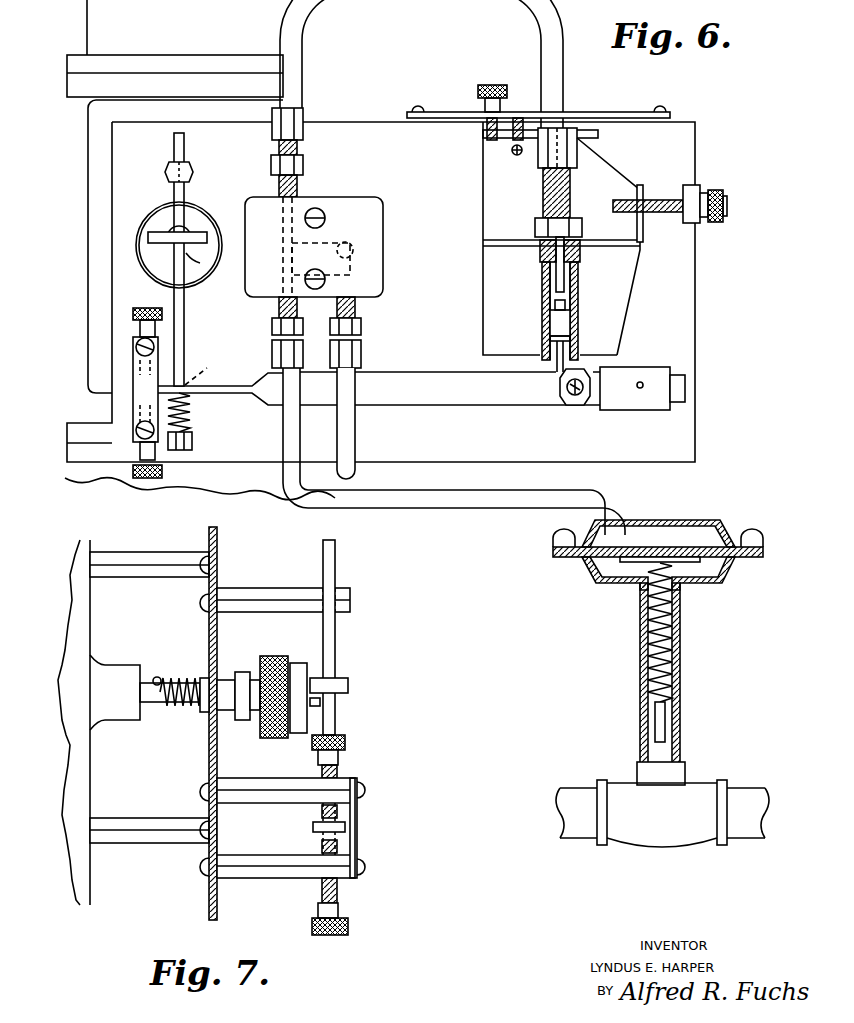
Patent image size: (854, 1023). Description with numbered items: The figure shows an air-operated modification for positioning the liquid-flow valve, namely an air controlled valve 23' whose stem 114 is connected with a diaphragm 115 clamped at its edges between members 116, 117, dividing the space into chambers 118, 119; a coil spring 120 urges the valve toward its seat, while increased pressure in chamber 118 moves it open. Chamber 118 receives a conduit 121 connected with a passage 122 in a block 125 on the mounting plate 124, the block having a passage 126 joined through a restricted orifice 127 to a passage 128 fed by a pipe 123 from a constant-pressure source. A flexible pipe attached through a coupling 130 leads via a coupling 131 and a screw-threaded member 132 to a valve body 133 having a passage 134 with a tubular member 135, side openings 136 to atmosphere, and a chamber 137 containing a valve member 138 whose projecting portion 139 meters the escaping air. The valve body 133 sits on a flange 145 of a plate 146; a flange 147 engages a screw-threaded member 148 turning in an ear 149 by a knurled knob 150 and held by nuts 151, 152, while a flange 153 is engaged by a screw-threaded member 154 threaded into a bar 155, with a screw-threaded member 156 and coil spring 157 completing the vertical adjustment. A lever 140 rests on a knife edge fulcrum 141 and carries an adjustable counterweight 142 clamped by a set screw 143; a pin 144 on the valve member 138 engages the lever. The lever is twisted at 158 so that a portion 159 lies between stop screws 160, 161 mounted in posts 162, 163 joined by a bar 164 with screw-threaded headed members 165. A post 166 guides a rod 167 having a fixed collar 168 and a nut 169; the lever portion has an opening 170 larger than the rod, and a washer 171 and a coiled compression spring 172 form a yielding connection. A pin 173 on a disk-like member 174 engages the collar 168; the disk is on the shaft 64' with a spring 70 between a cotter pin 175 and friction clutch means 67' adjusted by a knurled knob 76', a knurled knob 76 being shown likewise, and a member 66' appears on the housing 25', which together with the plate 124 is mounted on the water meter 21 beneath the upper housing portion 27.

In FIG. 6, the upper housing portion 27 is at (105, 4).
In FIG. 6, the housing 25' is at (356, 258).
In FIG. 7, the housing 25' is at (122, 718).
In FIG. 6, the water meter 21 is at (88, 466).
In FIG. 6, the conduit 121 is at (456, 500).
In FIG. 6, the screw-threaded coupling 130 is at (302, 132).
In FIG. 6, the mounting plate 124 is at (348, 142).
In FIG. 7, the mounting plate 124 is at (218, 535).
In FIG. 6, the passage 122 is at (292, 214).
In FIG. 6, the block 125 is at (363, 212).
In FIG. 6, the passage 126 is at (340, 240).
In FIG. 6, the restricted orifice 127 is at (352, 262).
In FIG. 6, the passage 128 is at (352, 288).
In FIG. 6, the twist 158 is at (258, 378).
In FIG. 6, the lever 140 is at (446, 408).
In FIG. 6, the pipe 123 is at (352, 422).
In FIG. 6, the lever portion 159 is at (212, 394).
In FIG. 7, the lever portion 159 is at (313, 826).
In FIG. 6, the rod 167 is at (181, 228).
In FIG. 7, the rod 167 is at (336, 642).
In FIG. 6, the post 166 is at (192, 176).
In FIG. 7, the post 166 is at (282, 598).
In FIG. 6, the knurled knob 76 is at (175, 230).
In FIG. 6, the disk-like member 174 is at (150, 262).
In FIG. 7, the disk-like member 174 is at (298, 664).
In FIG. 6, the collar 168 is at (210, 240).
In FIG. 7, the collar 168 is at (348, 686).
In FIG. 6, the pin 173 is at (198, 262).
In FIG. 7, the pin 173 is at (320, 704).
In FIG. 6, the bar 164 is at (152, 368).
In FIG. 7, the bar 164 is at (360, 822).
In FIG. 6, the screw-threaded headed members 165 is at (158, 340).
In FIG. 7, the screw-threaded headed members 165 is at (364, 790).
In FIG. 6, the stop screw 161 is at (134, 312).
In FIG. 7, the stop screw 161 is at (340, 766).
In FIG. 6, the stop screw 160 is at (150, 480).
In FIG. 7, the stop screw 160 is at (322, 890).
In FIG. 6, the washer 171 is at (183, 380).
In FIG. 6, the opening 170 is at (206, 368).
In FIG. 6, the coiled compression spring 172 is at (188, 418).
In FIG. 6, the nut 169 is at (193, 443).
In FIG. 6, the bar 155 is at (450, 112).
In FIG. 6, the screw-threaded member 156 is at (516, 118).
In FIG. 6, the screw-threaded member 154 is at (483, 134).
In FIG. 6, the flange 153 is at (495, 143).
In FIG. 6, the coil spring 157 is at (512, 153).
In FIG. 6, the plate 146 is at (503, 193).
In FIG. 6, the flange 145 is at (483, 262).
In FIG. 6, the screw-threaded member 132 is at (578, 152).
In FIG. 6, the coupling 131 is at (572, 196).
In FIG. 6, the passage 134 is at (556, 262).
In FIG. 6, the tubular member 135 is at (548, 288).
In FIG. 6, the side openings 136 is at (544, 306).
In FIG. 6, the projecting portion 139 is at (562, 304).
In FIG. 6, the valve member 138 is at (550, 330).
In FIG. 6, the chamber 137 is at (582, 322).
In FIG. 6, the valve body 133 is at (585, 256).
In FIG. 6, the flange 147 is at (640, 186).
In FIG. 6, the screw-threaded member 148 is at (655, 214).
In FIG. 6, the ear 149 is at (698, 186).
In FIG. 6, the nut 152 is at (688, 190).
In FIG. 6, the knurled knob 150 is at (722, 200).
In FIG. 6, the nut 151 is at (700, 218).
In FIG. 6, the pin 144 is at (553, 376).
In FIG. 6, the knife edge fulcrum 141 is at (578, 410).
In FIG. 6, the adjustable counterweight 142 is at (635, 378).
In FIG. 6, the set screw 143 is at (640, 388).
In FIG. 6, the member 116 is at (700, 520).
In FIG. 6, the chamber 118 is at (635, 535).
In FIG. 6, the member 117 is at (706, 588).
In FIG. 6, the diaphragm 115 is at (720, 572).
In FIG. 6, the chamber 119 is at (615, 578).
In FIG. 6, the coil spring 120 is at (682, 622).
In FIG. 6, the stem 114 is at (663, 690).
In FIG. 6, the air controlled valve 23' is at (662, 819).
In FIG. 7, the bracket 66' is at (116, 675).
In FIG. 7, the shaft 64' is at (170, 709).
In FIG. 7, the spring 70 is at (176, 684).
In FIG. 7, the cotter pin 175 is at (158, 678).
In FIG. 7, the friction clutch means 67' is at (230, 670).
In FIG. 7, the knurled knob 76' is at (271, 679).
In FIG. 7, the post 163 is at (280, 792).
In FIG. 7, the post 162 is at (266, 868).